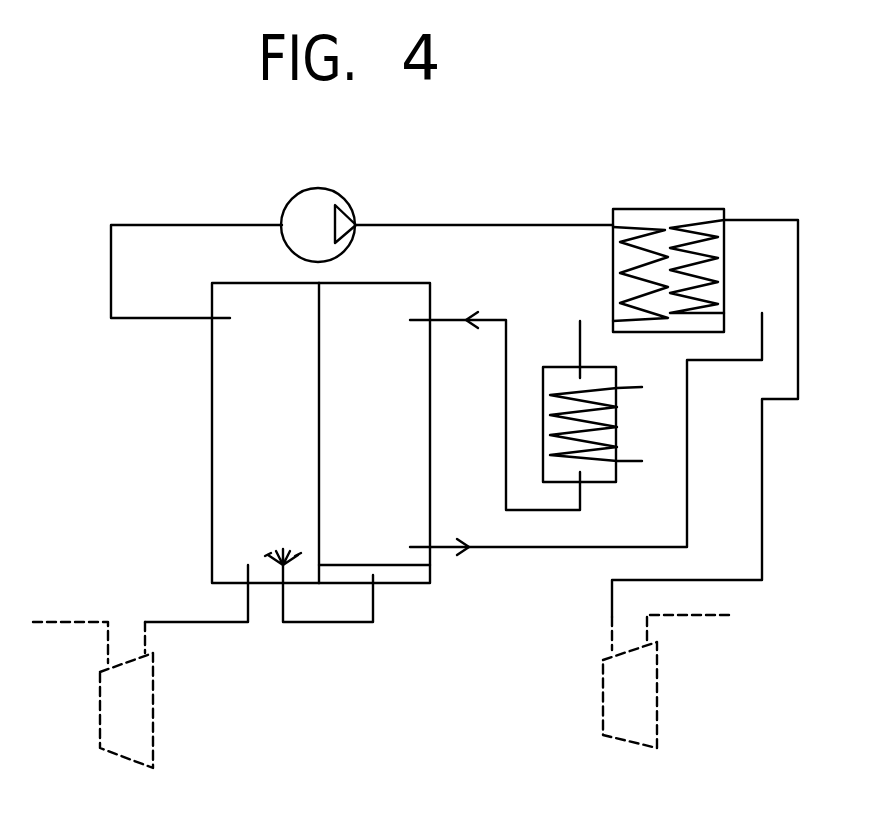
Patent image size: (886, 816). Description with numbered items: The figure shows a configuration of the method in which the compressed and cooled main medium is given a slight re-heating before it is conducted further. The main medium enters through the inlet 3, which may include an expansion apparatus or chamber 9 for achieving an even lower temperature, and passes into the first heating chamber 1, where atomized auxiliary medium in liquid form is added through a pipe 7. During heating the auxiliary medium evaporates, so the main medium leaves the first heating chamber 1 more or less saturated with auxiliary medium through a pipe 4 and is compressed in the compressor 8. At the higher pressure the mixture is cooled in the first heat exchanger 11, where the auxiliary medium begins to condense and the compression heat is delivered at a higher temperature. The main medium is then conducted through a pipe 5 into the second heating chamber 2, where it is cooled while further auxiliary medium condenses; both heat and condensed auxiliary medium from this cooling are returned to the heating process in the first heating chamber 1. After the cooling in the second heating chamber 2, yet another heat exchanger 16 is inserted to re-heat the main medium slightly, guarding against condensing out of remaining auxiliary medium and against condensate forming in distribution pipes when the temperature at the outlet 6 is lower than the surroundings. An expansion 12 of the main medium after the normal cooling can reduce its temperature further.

The first heating chamber 1 is at (280, 432).
The second heating chamber 2 is at (379, 432).
The inlet 3 is at (247, 602).
The pipe 4 is at (163, 316).
The pipe 5 is at (458, 315).
The outlet 6 is at (483, 543).
The pipe 7 is at (327, 624).
The compressor 8 is at (335, 187).
The expansion apparatus 9 is at (155, 700).
The first heat exchanger 11 is at (615, 440).
The expansion 12 is at (658, 700).
The heat exchanger 16 is at (667, 208).